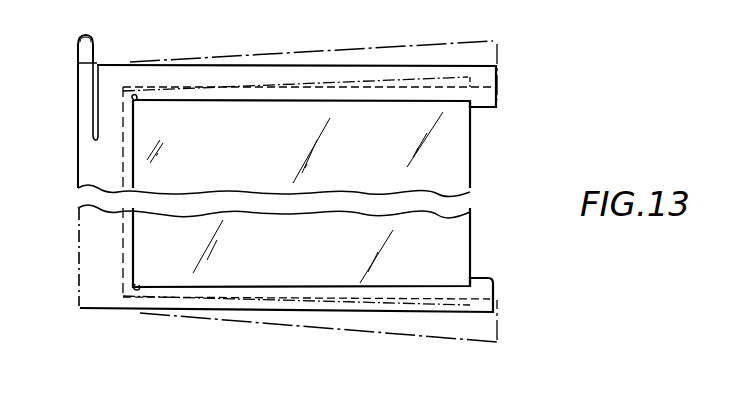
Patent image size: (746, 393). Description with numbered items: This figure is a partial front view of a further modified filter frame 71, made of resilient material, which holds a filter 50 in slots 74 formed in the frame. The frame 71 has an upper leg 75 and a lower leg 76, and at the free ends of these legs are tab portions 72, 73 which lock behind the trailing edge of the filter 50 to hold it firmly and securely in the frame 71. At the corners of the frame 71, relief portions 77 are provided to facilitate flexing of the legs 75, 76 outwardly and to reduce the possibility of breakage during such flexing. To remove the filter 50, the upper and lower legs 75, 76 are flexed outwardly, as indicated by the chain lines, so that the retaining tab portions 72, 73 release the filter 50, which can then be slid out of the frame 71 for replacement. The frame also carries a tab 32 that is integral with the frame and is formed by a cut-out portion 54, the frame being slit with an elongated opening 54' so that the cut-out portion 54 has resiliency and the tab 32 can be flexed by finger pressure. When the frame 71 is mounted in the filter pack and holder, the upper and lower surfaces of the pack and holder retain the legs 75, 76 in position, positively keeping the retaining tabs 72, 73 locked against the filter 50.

The tab 32 is at (90, 52).
The cut-out portion 54 is at (63, 111).
The elongated opening 54' is at (64, 101).
The upper tab portion 72 is at (488, 101).
The lower tab portion 73 is at (482, 283).
The upper leg 75 is at (257, 70).
The lower leg 76 is at (283, 312).
The filter frame 71 is at (100, 262).
The slots 74 is at (280, 98).
The relief portions 77 is at (137, 98).
The filter 50 is at (433, 168).